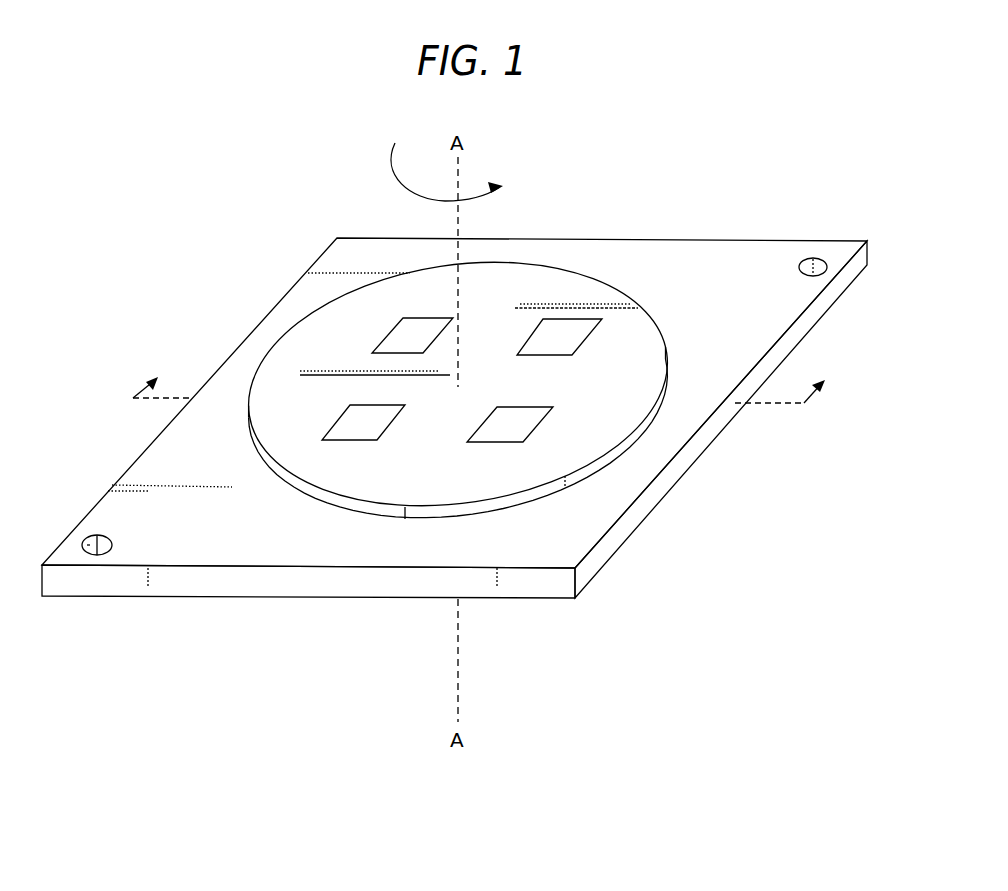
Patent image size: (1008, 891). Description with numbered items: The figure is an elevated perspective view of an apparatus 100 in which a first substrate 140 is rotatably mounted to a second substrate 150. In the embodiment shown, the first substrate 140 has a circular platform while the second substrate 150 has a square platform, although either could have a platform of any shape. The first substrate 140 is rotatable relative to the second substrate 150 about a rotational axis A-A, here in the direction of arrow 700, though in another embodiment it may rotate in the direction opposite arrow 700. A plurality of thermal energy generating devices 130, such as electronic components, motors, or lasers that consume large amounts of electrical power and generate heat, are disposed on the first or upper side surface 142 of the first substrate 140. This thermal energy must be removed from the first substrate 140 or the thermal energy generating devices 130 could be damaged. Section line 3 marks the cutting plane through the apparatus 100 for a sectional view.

The apparatus 100 is at (700, 186).
The thermal energy generating devices 130 is at (423, 328).
The first substrate 140 is at (625, 381).
The first or upper side surface 142 is at (506, 282).
The second substrate 150 is at (760, 260).
The arrow 700 is at (386, 172).
The section line 3- 3 is at (486, 381).